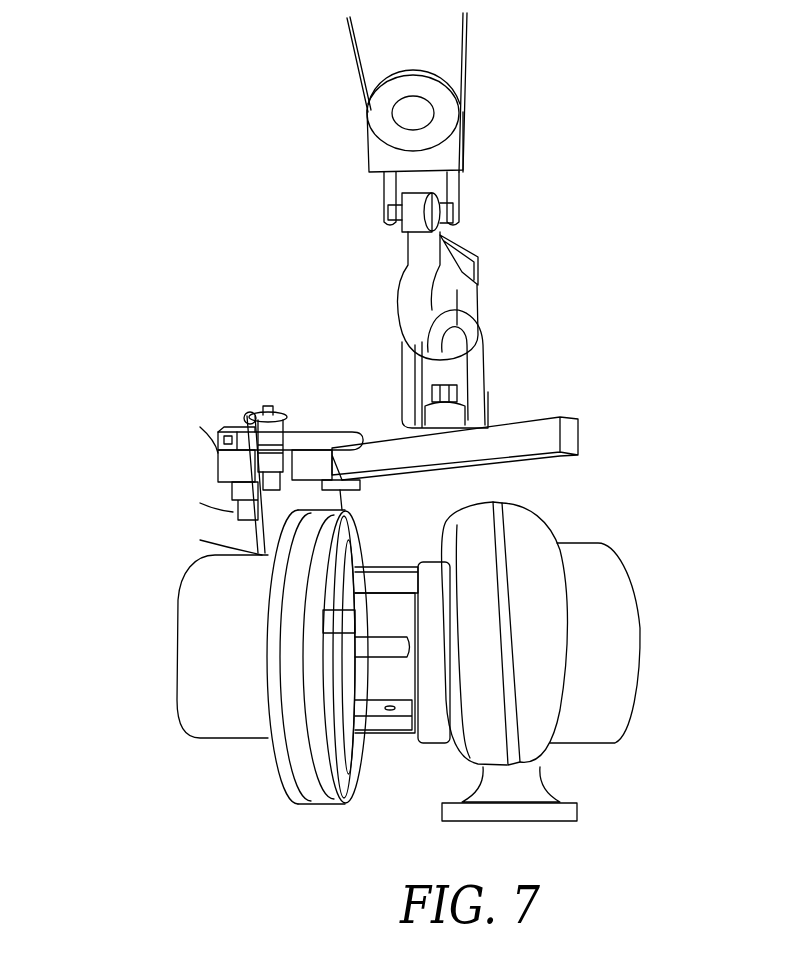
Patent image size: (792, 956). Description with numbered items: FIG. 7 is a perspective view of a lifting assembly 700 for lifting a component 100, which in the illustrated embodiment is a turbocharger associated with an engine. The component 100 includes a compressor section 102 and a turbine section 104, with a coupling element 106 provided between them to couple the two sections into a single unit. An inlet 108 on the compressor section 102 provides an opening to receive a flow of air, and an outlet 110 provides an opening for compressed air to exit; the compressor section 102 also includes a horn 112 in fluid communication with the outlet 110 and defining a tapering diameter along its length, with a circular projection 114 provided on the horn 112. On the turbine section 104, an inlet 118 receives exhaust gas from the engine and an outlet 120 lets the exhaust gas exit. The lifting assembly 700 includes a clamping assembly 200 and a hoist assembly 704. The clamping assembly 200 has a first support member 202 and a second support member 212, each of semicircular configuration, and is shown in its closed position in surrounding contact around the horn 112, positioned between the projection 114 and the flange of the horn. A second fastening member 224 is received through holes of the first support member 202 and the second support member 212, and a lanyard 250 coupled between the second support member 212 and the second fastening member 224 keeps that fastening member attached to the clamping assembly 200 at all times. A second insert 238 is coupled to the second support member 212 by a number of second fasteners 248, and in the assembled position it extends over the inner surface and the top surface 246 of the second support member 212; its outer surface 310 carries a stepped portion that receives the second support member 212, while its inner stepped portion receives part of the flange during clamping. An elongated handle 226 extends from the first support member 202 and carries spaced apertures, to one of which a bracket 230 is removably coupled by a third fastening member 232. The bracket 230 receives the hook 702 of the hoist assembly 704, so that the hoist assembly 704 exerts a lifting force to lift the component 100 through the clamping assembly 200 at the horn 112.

The lifting assembly 700 is at (367, 186).
The hook 702 is at (410, 280).
The hoist assembly 704 is at (458, 115).
The clamping assembly 200 is at (409, 410).
The first support member 202 is at (338, 478).
The second support member 212 is at (241, 462).
The second fastening member 224 is at (277, 403).
The handle 226 is at (548, 430).
The bracket 230 is at (470, 356).
The third fastening member 232 is at (465, 392).
The second insert 238 is at (222, 435).
The top surface 246 is at (230, 428).
The second fasteners 248 is at (360, 433).
The lanyard 250 is at (248, 410).
The outer surface 310 is at (310, 460).
The component 100 is at (407, 582).
The compressor section 102 is at (241, 768).
The turbine section 104 is at (580, 778).
The coupling element 106 is at (405, 765).
The inlet 108 is at (151, 633).
The outlet 110 is at (247, 434).
The horn 112 is at (270, 532).
The projection 114 is at (245, 505).
The inlet 118 is at (564, 836).
The outlet 120 is at (657, 632).